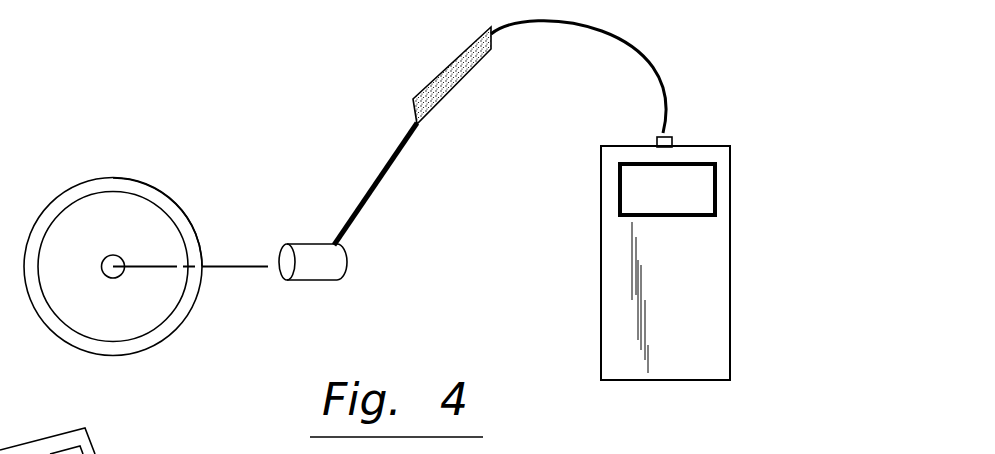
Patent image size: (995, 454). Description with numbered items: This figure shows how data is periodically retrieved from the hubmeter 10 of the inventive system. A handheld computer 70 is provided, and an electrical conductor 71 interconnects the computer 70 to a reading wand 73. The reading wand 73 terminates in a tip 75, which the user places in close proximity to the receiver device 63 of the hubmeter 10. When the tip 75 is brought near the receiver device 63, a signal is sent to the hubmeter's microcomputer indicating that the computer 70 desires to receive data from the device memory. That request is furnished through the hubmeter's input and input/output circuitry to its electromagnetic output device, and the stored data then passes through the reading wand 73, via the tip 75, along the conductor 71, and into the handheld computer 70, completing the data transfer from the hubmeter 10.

The hubmeter 10 is at (176, 203).
The receiver device 63 is at (182, 320).
The tip 75 is at (288, 245).
The reading wand 73 is at (461, 14).
The electrical conductor 71 is at (607, 28).
The handheld computer 70 is at (745, 302).